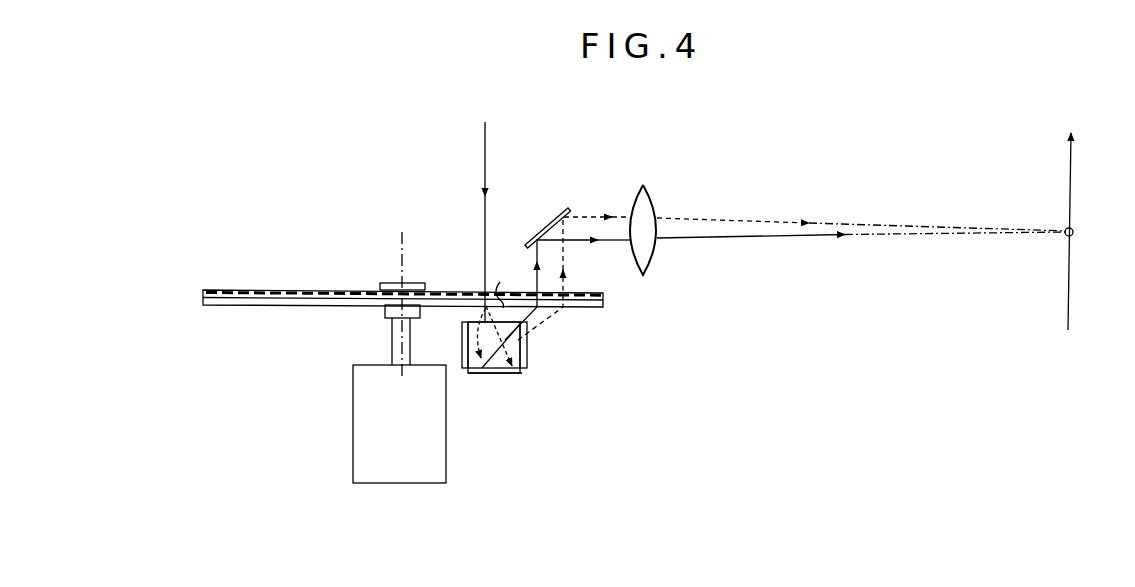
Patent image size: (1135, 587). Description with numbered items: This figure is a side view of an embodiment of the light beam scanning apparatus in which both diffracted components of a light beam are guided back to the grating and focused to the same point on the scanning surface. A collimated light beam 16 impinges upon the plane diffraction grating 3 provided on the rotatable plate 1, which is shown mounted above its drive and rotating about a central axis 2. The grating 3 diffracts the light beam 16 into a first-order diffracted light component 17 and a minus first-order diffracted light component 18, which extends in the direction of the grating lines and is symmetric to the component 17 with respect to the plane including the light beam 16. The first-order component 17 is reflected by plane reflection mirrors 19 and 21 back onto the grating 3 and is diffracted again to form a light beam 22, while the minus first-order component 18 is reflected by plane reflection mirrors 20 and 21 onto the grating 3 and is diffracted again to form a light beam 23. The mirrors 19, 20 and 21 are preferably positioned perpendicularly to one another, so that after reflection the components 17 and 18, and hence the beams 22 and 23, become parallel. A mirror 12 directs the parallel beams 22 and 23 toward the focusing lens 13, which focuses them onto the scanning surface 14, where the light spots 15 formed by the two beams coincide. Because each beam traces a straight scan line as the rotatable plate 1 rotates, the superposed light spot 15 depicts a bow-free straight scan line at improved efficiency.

The rotatable plate 1 is at (203, 299).
The rotation axis 2 is at (400, 247).
The plane diffraction grating 3 is at (470, 292).
The mirror 12 is at (560, 207).
The focusing lens 13 is at (648, 186).
The scanning surface 14 is at (1072, 165).
The light spot 15 is at (1066, 229).
The collimated light beam 16 is at (486, 155).
The first-order diffracted light component 17 is at (474, 305).
The minus first-order diffracted light component 18 is at (512, 283).
The plane reflection mirror 19 is at (462, 350).
The plane reflection mirror 20 is at (527, 356).
The plane reflection mirror 21 is at (498, 373).
The light beam 22 is at (527, 243).
The light beam 23 is at (565, 262).